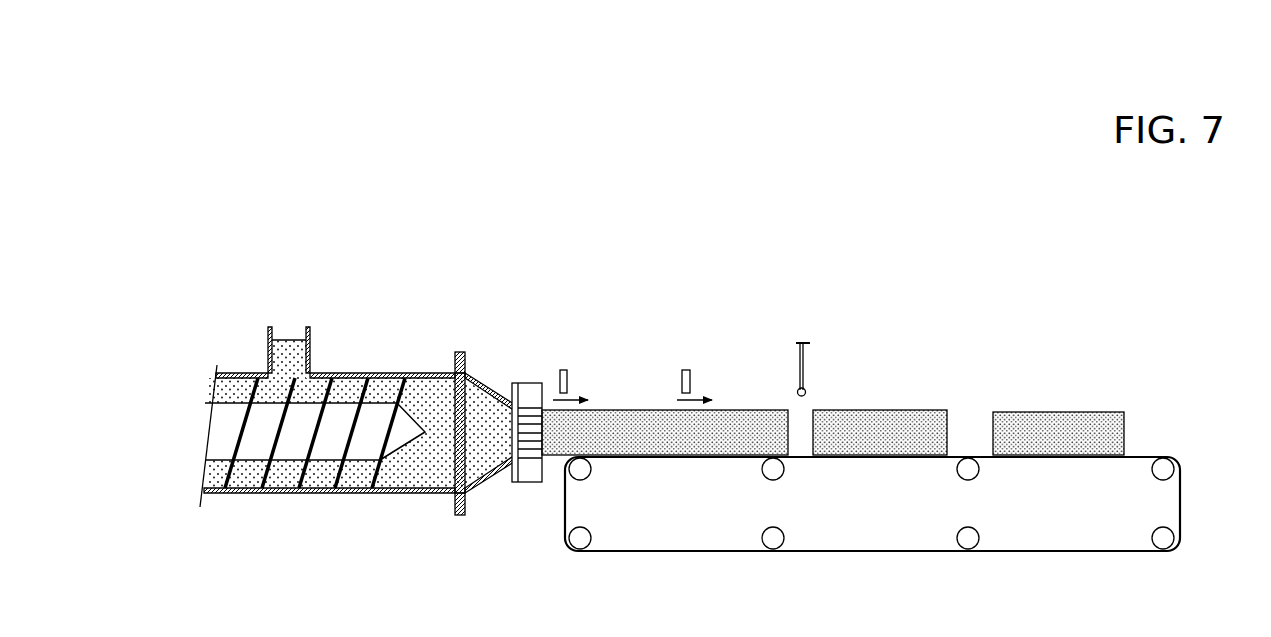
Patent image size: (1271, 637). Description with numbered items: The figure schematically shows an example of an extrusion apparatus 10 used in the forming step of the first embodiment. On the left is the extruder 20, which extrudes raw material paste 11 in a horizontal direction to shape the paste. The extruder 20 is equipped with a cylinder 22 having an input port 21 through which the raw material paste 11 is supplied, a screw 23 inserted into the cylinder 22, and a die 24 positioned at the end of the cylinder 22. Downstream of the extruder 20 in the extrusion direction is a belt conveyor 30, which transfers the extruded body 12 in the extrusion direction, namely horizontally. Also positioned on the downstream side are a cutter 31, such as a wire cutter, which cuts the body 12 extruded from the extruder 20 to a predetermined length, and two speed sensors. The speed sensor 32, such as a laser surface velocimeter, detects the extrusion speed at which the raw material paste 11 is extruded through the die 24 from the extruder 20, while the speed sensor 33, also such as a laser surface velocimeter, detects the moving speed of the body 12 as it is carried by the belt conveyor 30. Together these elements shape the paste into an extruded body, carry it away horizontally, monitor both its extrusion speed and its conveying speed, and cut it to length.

The extrusion apparatus 10 is at (953, 314).
The raw material paste 11 is at (432, 470).
The extruded body 12 is at (640, 410).
The extruder 20 is at (449, 312).
The input port 21 is at (305, 333).
The cylinder 22 is at (343, 491).
The screw 23 is at (285, 450).
The die 24 is at (525, 383).
The belt conveyor 30 is at (1181, 507).
The cutter 31 is at (806, 358).
The speed sensor 32 is at (563, 370).
The speed sensor 33 is at (686, 370).